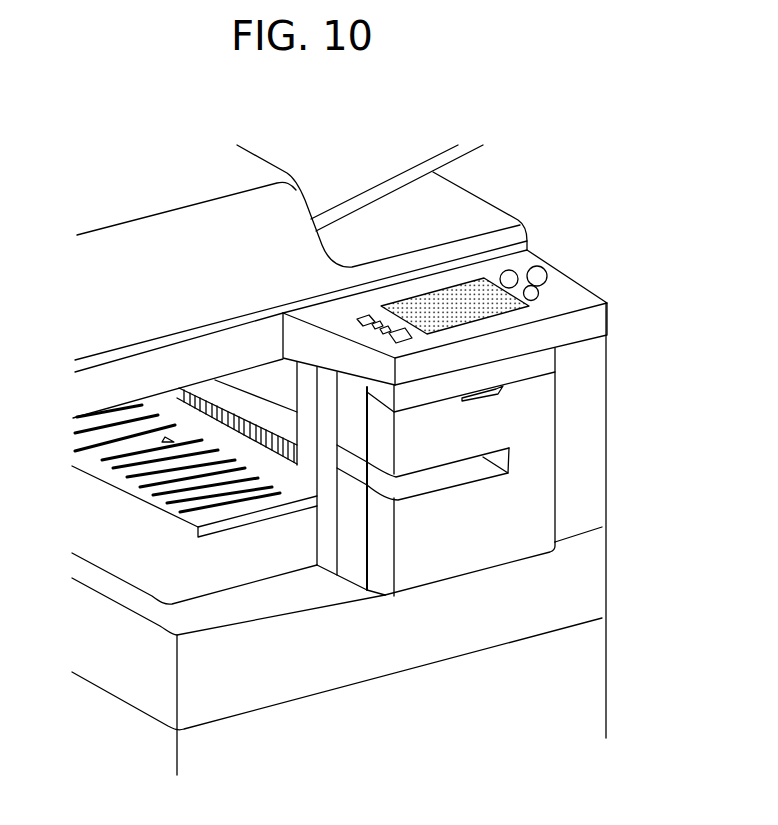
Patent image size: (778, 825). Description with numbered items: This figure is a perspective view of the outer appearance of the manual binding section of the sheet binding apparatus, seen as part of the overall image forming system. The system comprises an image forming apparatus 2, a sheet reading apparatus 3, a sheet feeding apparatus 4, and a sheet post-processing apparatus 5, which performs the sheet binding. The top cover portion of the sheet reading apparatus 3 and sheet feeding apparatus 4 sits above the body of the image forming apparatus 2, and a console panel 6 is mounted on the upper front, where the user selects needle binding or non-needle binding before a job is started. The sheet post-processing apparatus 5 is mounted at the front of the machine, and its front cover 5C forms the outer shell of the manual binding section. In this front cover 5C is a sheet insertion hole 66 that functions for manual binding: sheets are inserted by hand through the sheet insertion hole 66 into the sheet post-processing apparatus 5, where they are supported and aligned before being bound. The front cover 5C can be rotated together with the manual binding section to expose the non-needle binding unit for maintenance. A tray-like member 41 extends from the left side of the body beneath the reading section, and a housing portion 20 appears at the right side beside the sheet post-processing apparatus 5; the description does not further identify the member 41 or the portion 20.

The image forming apparatus 2 is at (623, 657).
The sheet reading apparatus 3 is at (165, 377).
The sheet feeding apparatus 4 is at (466, 214).
The sheet post-processing apparatus 5 is at (463, 557).
The front cover 5C is at (547, 485).
The console panel 6 is at (484, 283).
The housing side portion 20 is at (597, 367).
The discharge tray 41 is at (180, 524).
The sheet insertion hole 66 is at (433, 481).